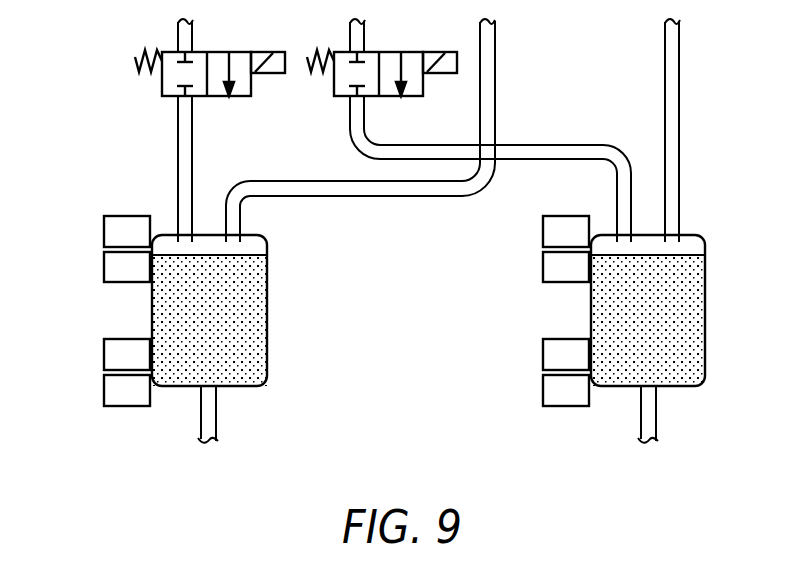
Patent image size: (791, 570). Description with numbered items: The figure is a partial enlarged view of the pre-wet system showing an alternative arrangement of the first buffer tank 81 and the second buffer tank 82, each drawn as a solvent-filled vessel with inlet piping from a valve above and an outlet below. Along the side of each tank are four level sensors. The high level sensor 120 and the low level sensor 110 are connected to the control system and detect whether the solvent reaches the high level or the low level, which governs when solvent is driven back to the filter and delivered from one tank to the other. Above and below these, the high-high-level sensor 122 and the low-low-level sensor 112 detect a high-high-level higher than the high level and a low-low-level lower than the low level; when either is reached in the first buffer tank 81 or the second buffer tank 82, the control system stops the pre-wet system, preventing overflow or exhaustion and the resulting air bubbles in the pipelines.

The first buffer tank 81 is at (267, 298).
The second buffer tank 82 is at (705, 298).
The high-high-level sensor 122 is at (104, 233).
The high level sensor 120 is at (104, 267).
The low level sensor 110 is at (104, 356).
The low-low-level sensor 112 is at (104, 392).